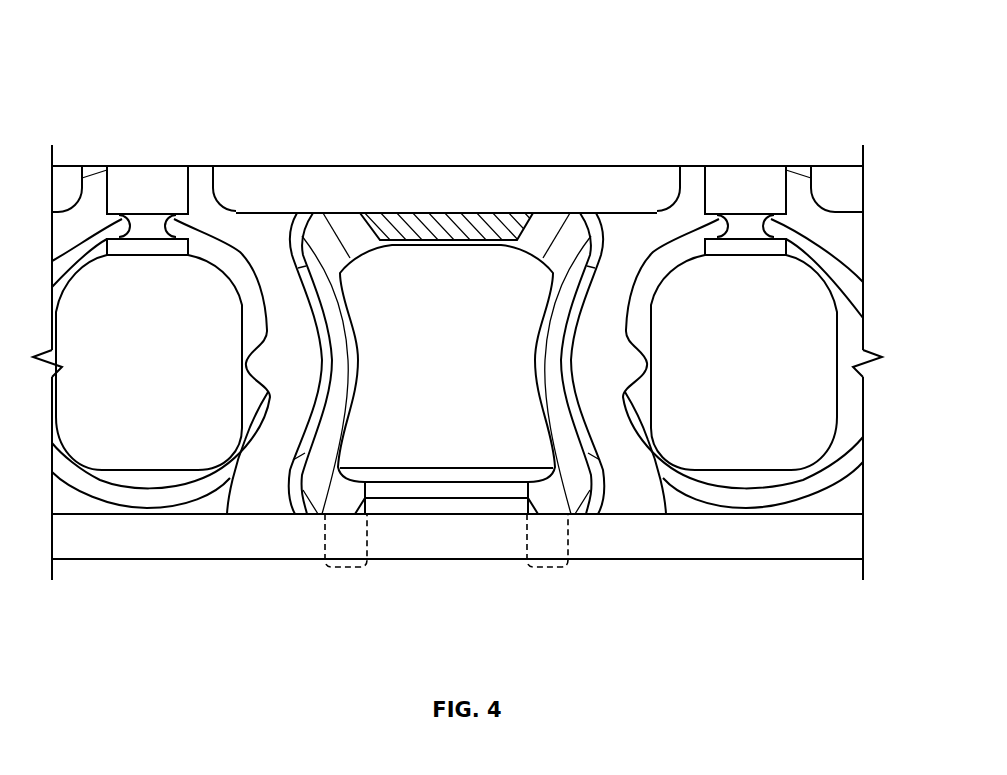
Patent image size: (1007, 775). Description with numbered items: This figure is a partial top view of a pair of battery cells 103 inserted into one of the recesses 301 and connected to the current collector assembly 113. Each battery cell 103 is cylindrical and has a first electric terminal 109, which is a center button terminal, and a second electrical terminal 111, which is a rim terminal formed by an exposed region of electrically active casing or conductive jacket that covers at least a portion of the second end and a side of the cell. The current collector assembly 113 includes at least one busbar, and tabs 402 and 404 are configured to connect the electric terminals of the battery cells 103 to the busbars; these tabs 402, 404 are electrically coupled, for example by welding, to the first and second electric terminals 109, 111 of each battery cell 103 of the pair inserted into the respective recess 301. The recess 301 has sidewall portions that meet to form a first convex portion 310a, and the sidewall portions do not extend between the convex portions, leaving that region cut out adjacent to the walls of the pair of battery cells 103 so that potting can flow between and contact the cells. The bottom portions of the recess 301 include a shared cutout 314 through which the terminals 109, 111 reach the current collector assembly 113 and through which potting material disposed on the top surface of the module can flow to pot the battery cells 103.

The current collector assembly 113 is at (855, 127).
The battery cell 103 is at (197, 198).
The second electrical terminal 111 is at (325, 240).
The first convex portion 310a is at (443, 222).
The shared cutout 314 is at (543, 237).
The tab 402 is at (143, 443).
The first electric terminal 109 is at (252, 397).
The tab 404 is at (443, 442).
The recess 301 is at (573, 570).